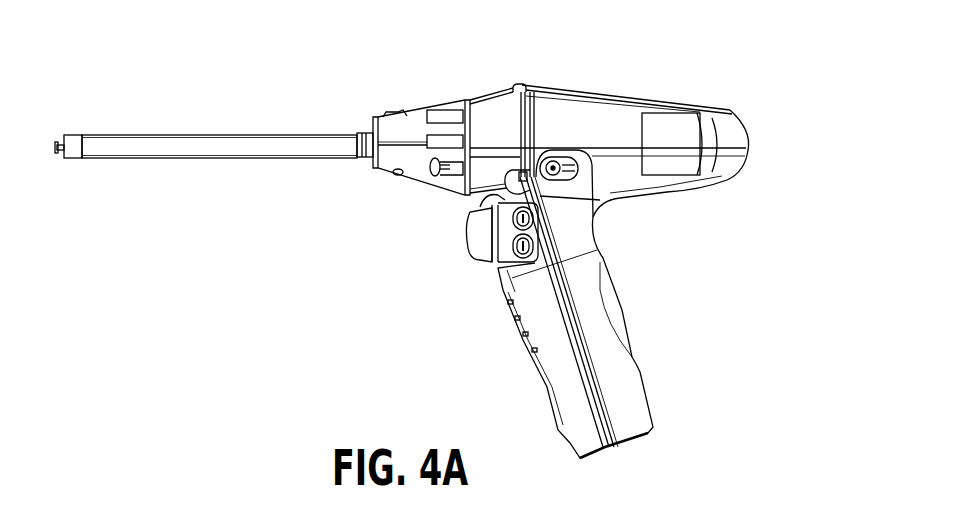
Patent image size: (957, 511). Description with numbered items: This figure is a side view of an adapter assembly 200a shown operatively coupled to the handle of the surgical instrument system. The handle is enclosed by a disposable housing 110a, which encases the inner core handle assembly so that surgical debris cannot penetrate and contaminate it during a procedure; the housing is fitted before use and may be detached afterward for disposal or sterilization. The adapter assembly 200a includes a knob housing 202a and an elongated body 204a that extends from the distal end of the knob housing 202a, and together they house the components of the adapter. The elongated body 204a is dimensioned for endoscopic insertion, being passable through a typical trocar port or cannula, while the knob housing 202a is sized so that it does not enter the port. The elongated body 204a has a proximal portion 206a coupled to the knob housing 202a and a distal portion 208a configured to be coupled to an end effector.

The adapter assembly 200a is at (341, 86).
The knob housing 202a is at (442, 100).
The elongated body 204a is at (242, 135).
The proximal portion 206a is at (359, 158).
The distal portion 208a is at (73, 135).
The disposable housing 110a is at (605, 120).